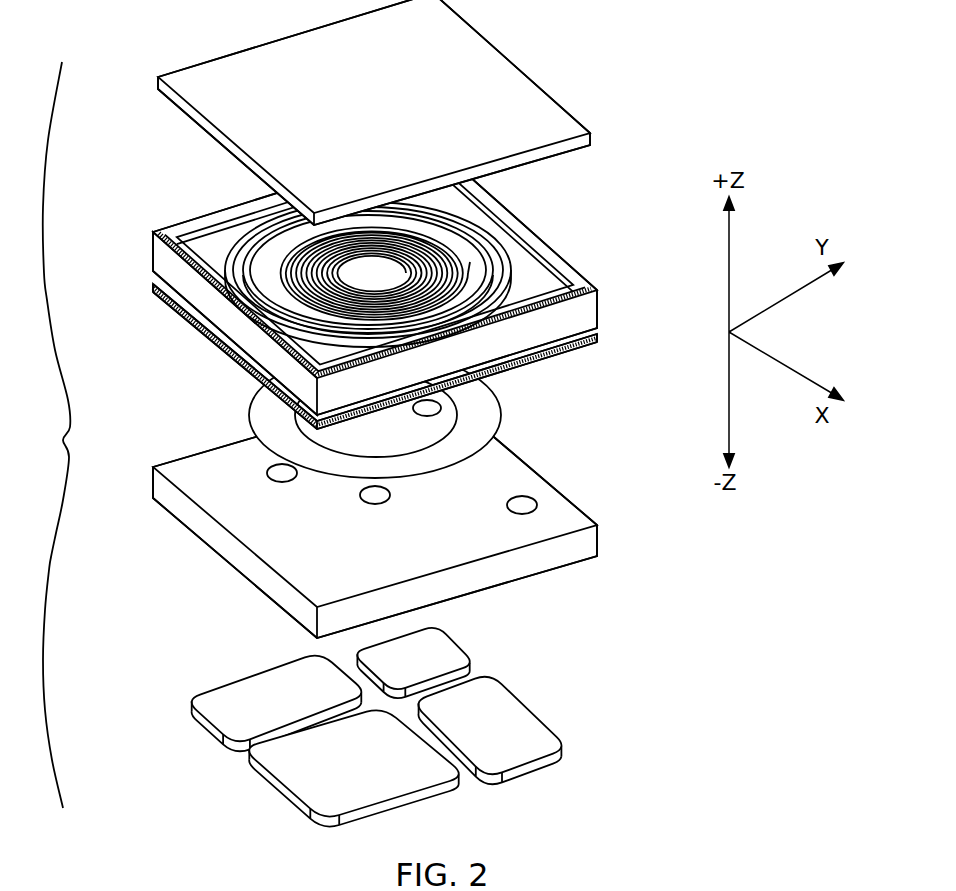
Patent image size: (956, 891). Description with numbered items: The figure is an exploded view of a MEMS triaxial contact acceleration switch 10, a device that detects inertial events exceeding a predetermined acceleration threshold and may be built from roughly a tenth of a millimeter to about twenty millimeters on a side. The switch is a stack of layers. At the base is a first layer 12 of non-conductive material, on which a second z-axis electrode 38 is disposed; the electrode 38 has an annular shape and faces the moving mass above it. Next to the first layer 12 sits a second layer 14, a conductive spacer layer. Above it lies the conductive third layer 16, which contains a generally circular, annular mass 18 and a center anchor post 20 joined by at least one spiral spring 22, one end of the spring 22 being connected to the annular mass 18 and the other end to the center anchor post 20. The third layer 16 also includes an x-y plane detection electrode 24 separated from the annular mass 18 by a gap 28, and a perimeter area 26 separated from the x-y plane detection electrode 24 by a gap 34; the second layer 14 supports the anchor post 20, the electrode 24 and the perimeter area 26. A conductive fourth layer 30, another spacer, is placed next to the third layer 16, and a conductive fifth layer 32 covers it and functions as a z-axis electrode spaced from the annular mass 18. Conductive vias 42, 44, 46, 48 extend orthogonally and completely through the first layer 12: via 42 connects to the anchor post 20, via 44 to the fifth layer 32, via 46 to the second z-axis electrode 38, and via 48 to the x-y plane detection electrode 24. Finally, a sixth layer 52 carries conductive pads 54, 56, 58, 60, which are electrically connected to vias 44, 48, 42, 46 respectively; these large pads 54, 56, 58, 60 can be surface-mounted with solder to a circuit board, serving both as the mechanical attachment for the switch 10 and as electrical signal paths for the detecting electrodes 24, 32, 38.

The MEMS triaxial contact acceleration switch 10 is at (120, 152).
The first layer 12 is at (386, 511).
The second layer 14 is at (578, 353).
The third layer 16 is at (375, 279).
The annular mass 18 is at (262, 271).
The center anchor post 20 is at (372, 277).
The spiral spring 22 is at (470, 262).
The x-y plane detection electrode 24 is at (307, 262).
The perimeter area 26 is at (157, 252).
The gap 28 is at (500, 272).
The fourth layer 30 is at (584, 290).
The fifth layer 32 is at (560, 115).
The gap 34 is at (404, 246).
The second z-axis electrode 38 is at (413, 415).
The conductive via 42 is at (373, 501).
The conductive via 44 is at (432, 405).
The conductive via 46 is at (277, 470).
The conductive via 48 is at (528, 499).
The sixth layer 52 is at (437, 727).
The conductive pad 54 is at (398, 667).
The conductive pad 56 is at (476, 732).
The conductive pad 58 is at (340, 775).
The conductive pad 60 is at (263, 707).